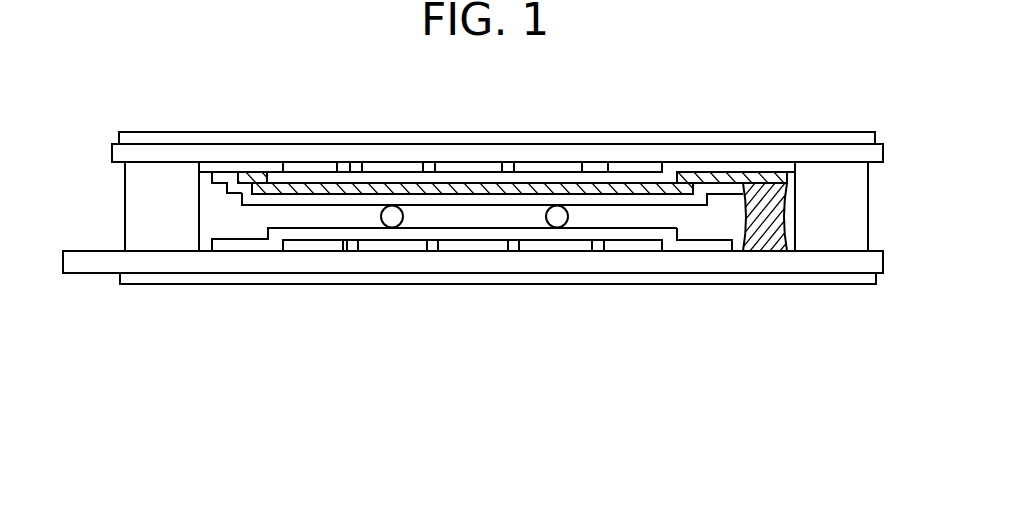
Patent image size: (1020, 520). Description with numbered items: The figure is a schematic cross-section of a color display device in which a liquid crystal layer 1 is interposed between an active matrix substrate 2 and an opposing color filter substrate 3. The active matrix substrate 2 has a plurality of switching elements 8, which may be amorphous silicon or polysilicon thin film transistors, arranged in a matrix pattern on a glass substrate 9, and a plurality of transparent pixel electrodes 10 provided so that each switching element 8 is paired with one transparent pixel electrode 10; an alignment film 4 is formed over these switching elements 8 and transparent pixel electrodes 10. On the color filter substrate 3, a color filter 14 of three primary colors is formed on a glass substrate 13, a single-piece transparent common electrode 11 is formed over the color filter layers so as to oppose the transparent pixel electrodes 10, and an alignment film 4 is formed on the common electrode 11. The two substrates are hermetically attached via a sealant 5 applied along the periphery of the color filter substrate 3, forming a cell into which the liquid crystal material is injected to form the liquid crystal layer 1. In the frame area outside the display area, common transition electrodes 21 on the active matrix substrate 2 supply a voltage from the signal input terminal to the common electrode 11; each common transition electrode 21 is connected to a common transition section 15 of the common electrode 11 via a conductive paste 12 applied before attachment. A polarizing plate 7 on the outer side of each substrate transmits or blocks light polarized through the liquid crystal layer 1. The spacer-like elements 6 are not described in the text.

The liquid crystal layer 1 is at (328, 218).
The active matrix substrate 2 is at (105, 283).
The color filter substrate 3 is at (98, 130).
The alignment film 4 is at (232, 193).
The sealant 5 is at (838, 235).
The bump electrodes 6 is at (557, 228).
The polarizing plate 7 is at (851, 132).
The switching element 8 is at (594, 250).
The glass substrate 9 is at (203, 256).
The transparent pixel electrode 10 is at (313, 241).
The common electrode 11 is at (734, 172).
The conductive paste 12 is at (788, 243).
The glass substrate 13 is at (283, 161).
The color filter 14 is at (667, 172).
The common transition section 15 is at (765, 172).
The common transition electrode 21 is at (768, 250).